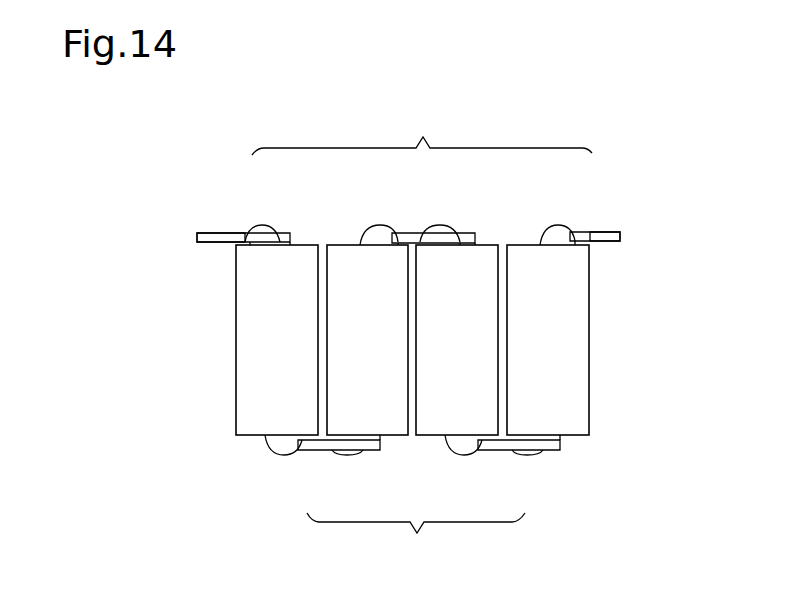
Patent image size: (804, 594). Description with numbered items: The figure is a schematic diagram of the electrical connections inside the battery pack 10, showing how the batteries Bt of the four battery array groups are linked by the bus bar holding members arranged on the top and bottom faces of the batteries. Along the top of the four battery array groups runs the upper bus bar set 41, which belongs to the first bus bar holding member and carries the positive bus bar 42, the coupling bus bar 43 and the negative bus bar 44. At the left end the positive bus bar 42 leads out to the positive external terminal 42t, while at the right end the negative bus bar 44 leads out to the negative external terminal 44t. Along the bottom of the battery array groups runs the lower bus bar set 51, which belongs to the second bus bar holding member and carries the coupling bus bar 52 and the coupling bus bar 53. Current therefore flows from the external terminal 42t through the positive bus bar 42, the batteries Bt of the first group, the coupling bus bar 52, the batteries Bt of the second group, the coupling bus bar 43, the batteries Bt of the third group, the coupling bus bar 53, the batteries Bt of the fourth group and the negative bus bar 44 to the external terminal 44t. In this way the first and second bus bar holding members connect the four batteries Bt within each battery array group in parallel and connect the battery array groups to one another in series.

The battery pack 10 is at (626, 192).
The battery Bt is at (236, 343).
The first bus bar group 41 is at (422, 129).
The positive bus bar 42 is at (236, 233).
The external terminal (positive) 42t is at (197, 237).
The coupling bus bar 43 is at (417, 232).
The negative bus bar 44 is at (590, 233).
The external terminal (negative) 44t is at (622, 238).
The second bus bar group 51 is at (416, 540).
The coupling bus bar 52 is at (318, 455).
The coupling bus bar 53 is at (500, 455).